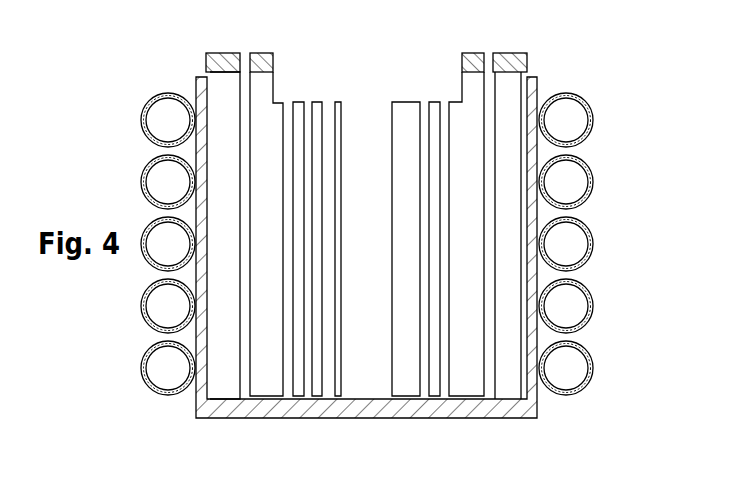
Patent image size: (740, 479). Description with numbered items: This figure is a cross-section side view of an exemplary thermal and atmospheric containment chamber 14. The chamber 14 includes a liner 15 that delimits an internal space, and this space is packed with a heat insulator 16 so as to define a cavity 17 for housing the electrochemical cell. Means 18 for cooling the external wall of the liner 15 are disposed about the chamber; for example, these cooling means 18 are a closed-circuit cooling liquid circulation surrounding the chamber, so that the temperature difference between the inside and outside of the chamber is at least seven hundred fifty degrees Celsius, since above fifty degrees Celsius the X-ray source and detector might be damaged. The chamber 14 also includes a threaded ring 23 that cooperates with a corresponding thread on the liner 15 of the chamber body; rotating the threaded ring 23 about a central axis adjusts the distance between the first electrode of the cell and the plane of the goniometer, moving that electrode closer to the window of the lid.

The thermal and atmospheric containment chamber 14 is at (411, 238).
The liner 15 is at (538, 78).
The heat insulator 16 is at (460, 370).
The cavity 17 is at (379, 96).
The means for cooling 18 is at (593, 183).
The threaded ring 23 is at (527, 63).